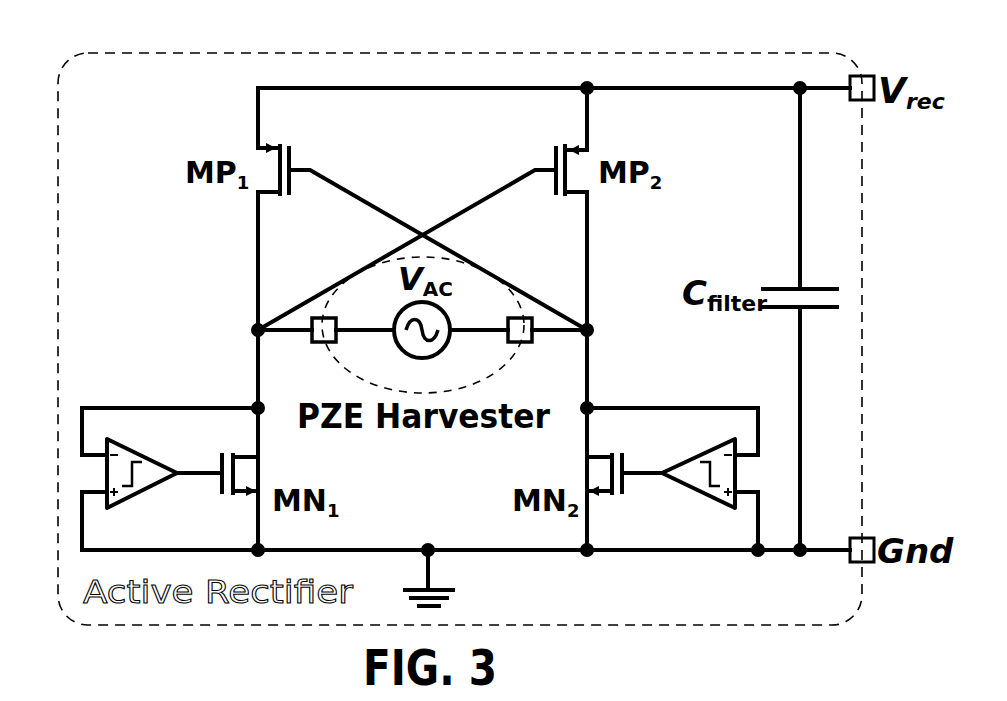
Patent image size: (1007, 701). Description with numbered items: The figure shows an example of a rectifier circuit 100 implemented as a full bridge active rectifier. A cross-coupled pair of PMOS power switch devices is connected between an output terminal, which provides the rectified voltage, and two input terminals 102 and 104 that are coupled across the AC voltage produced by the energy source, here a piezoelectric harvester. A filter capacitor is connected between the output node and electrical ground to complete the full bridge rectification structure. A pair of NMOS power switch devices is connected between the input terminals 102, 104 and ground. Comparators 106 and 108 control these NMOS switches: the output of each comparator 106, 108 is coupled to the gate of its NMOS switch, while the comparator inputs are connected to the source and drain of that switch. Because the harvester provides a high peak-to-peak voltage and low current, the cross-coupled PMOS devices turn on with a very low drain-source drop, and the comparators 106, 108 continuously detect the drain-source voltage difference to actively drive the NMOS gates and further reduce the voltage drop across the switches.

The rectifier circuit 100 is at (152, 52).
The input terminal 102 is at (330, 345).
The input terminal 104 is at (515, 345).
The comparator 106 is at (136, 452).
The comparator 108 is at (707, 452).